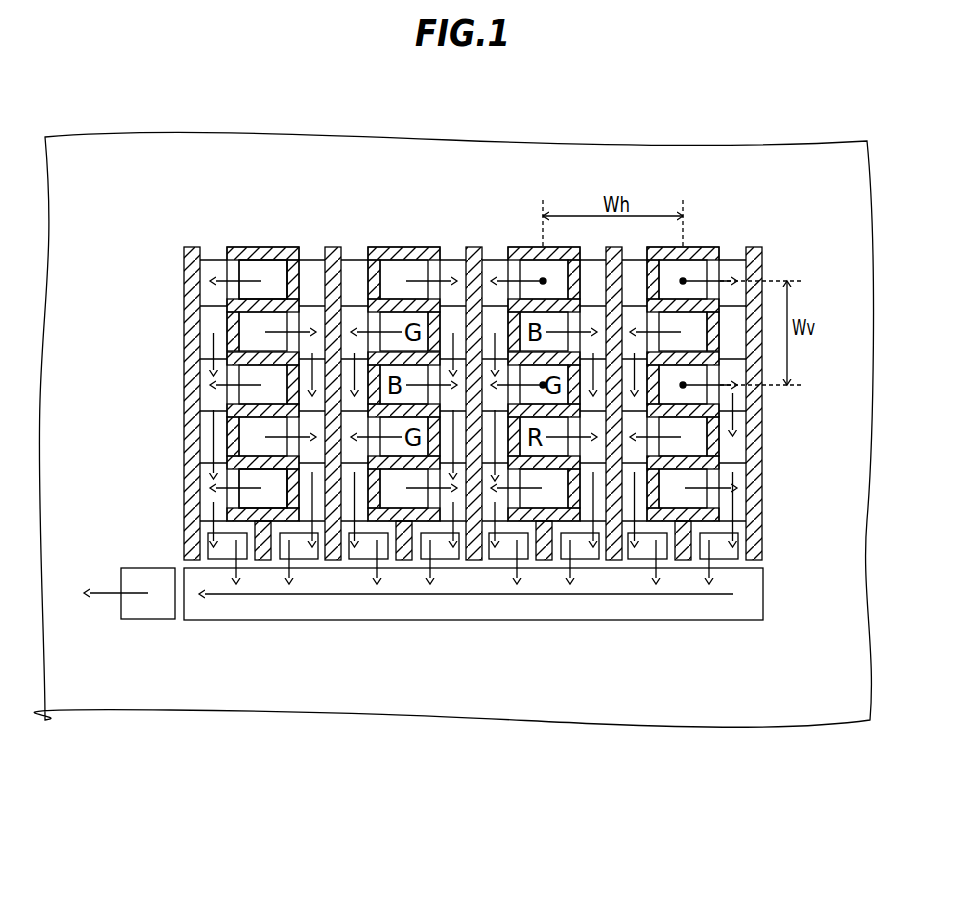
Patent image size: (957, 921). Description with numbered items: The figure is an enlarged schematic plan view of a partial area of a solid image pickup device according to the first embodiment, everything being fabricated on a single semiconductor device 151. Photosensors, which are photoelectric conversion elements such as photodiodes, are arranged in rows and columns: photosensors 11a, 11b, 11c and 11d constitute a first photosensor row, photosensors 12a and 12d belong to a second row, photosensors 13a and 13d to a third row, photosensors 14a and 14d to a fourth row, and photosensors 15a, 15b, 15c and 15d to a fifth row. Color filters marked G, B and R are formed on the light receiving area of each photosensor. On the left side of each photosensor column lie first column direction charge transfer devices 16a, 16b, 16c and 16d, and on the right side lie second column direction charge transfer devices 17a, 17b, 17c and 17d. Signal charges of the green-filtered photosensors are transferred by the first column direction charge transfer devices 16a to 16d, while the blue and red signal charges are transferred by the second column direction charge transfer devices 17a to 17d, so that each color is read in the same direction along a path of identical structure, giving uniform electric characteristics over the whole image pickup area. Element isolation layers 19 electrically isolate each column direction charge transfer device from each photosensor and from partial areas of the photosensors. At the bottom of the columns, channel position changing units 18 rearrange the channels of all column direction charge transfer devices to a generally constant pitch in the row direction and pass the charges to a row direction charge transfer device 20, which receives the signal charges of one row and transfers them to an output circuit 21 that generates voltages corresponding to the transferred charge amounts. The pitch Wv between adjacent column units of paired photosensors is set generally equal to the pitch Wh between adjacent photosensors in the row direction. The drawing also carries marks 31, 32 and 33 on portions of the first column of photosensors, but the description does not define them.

The photosensor 11a is at (227, 508).
The photosensor 11b is at (410, 497).
The photosensor 11c is at (548, 500).
The photosensor 11d is at (690, 525).
The photosensor 12a is at (206, 439).
The photosensor 12d is at (712, 440).
The photosensor 13a is at (257, 391).
The photosensor 13d is at (695, 397).
The photosensor 14a is at (206, 340).
The photosensor 14d is at (700, 347).
The photosensor 15a is at (252, 291).
The photosensor 15b is at (425, 270).
The photosensor 15c is at (527, 270).
The photosensor 15d is at (697, 270).
The first column direction charge transfer device 16a is at (215, 267).
The first column direction charge transfer device 16b is at (357, 265).
The first column direction charge transfer device 16c is at (497, 270).
The first column direction charge transfer device 16d is at (637, 270).
The second column direction charge transfer device 17a is at (317, 260).
The second column direction charge transfer device 17b is at (455, 272).
The second column direction charge transfer device 17c is at (597, 265).
The second column direction charge transfer device 17d is at (733, 262).
The channel position changing unit 18 is at (278, 553).
The element isolation layer 19 is at (335, 560).
The row direction charge transfer device 20 is at (703, 608).
The output circuit 21 is at (138, 620).
The photoelectric conversion region 31 is at (250, 278).
The transfer transistor 32 is at (257, 315).
The transfer transistor 33 is at (180, 443).
The semiconductor device 151 is at (163, 697).